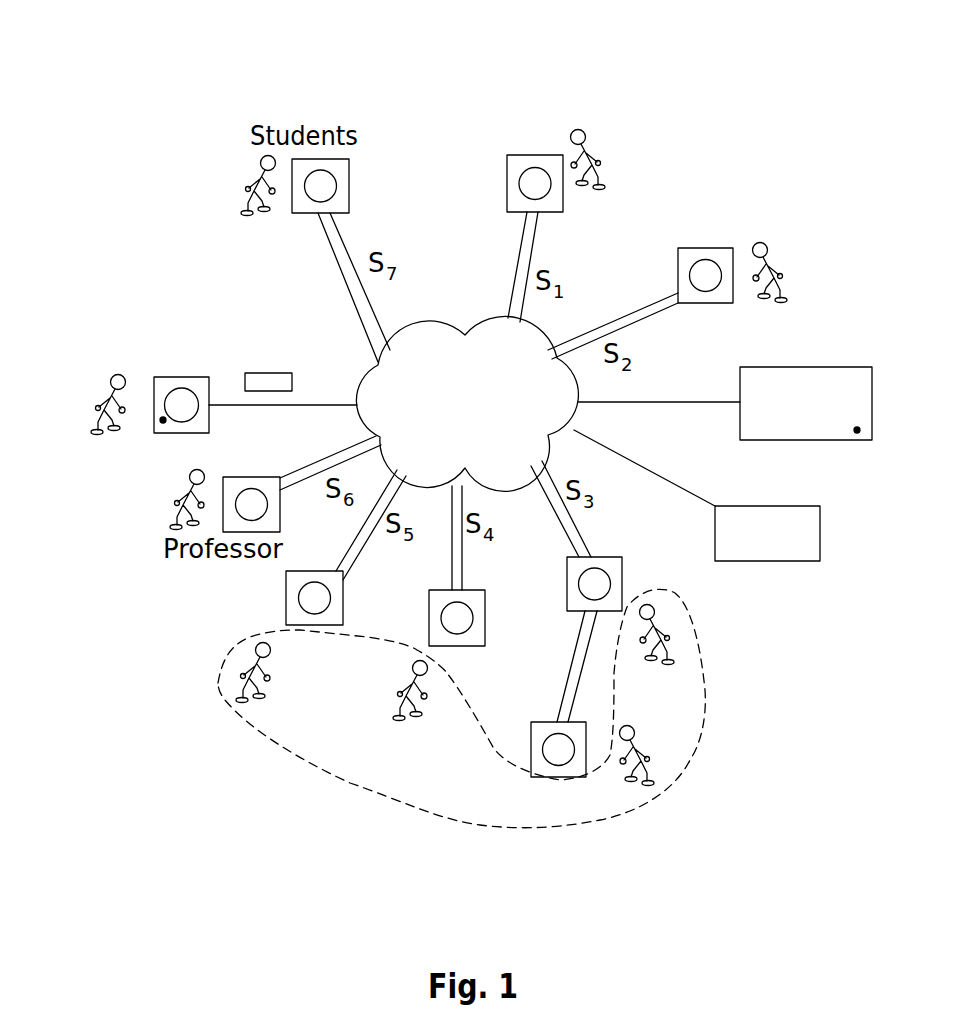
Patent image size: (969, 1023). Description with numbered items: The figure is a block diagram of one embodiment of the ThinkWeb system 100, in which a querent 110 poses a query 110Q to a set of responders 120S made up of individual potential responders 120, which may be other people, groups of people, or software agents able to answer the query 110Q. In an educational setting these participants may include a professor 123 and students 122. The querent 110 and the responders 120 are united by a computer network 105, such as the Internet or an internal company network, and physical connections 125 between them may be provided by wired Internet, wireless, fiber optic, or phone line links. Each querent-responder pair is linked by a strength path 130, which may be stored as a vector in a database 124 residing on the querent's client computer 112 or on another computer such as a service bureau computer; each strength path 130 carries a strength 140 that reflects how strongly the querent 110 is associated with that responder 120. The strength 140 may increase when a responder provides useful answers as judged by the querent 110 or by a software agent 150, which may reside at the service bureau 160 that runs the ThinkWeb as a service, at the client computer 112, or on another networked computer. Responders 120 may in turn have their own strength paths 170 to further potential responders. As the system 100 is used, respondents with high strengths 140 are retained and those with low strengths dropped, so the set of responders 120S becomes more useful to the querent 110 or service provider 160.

The system 100 is at (773, 53).
The computer network 105 is at (576, 416).
The querent 110 is at (106, 376).
The query 110Q is at (266, 373).
The user's client computer 112 is at (178, 377).
The potential responder 120 is at (600, 152).
The set of responders 120S is at (455, 822).
The students 122 is at (248, 192).
The professor 123 is at (172, 504).
The database 124 is at (161, 422).
The physical connections 125 is at (520, 237).
The strength paths 130 is at (542, 223).
The strength 140 is at (565, 277).
The software agent 150 is at (820, 528).
The service bureau 160 is at (872, 379).
The strength paths 170 is at (590, 612).